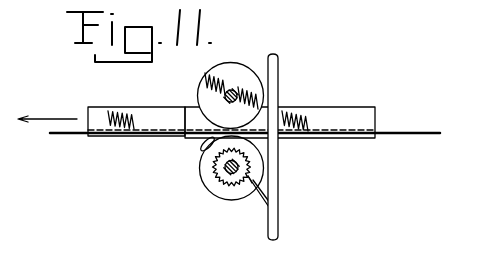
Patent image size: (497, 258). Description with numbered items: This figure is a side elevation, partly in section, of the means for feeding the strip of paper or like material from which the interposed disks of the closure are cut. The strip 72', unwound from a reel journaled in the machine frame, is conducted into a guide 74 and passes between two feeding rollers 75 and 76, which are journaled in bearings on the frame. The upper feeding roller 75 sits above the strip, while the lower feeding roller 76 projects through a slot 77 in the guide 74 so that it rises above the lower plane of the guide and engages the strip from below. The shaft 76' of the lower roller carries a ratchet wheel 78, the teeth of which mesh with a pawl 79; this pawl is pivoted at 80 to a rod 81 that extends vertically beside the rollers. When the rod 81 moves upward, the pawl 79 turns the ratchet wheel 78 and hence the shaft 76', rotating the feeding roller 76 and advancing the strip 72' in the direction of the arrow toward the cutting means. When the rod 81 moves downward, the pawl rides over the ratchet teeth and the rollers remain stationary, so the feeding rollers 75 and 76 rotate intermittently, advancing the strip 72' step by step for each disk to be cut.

The strip 72' is at (245, 117).
The guide 74 is at (338, 113).
The feeding roller 75 is at (235, 62).
The feeding roller 76 is at (223, 173).
The shaft 76' is at (198, 170).
The slot 77 is at (201, 150).
The ratchet wheel 78 is at (241, 188).
The pawl 79 is at (262, 196).
The pivot 80 is at (278, 217).
The rod 81 is at (277, 228).